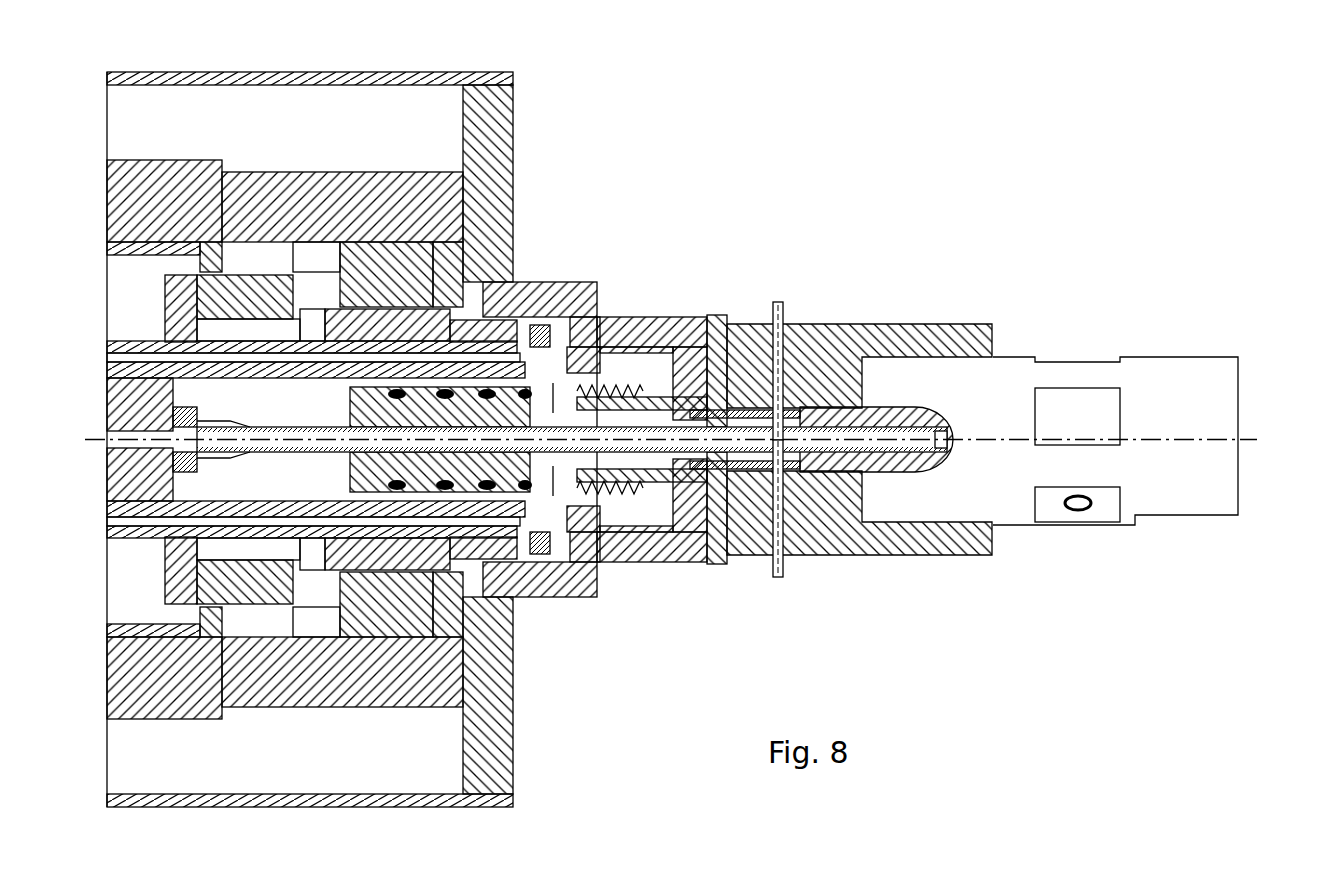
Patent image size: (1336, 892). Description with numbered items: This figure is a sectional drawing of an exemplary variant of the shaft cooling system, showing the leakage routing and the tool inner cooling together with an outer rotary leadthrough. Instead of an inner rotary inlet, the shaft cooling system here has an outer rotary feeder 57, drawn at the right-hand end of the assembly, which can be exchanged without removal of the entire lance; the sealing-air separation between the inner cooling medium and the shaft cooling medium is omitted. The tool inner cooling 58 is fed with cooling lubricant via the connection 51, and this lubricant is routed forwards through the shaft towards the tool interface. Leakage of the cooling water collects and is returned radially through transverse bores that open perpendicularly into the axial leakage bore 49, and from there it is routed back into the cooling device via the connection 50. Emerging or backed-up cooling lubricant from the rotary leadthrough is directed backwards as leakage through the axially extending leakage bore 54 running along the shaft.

The axial leakage bore 49 is at (641, 455).
The connection 50 is at (785, 323).
The connection 51 is at (780, 550).
The axially extending leakage bore 54 is at (738, 463).
The outer rotary feeder 57 is at (1197, 390).
The tool inner cooling 58 is at (687, 423).